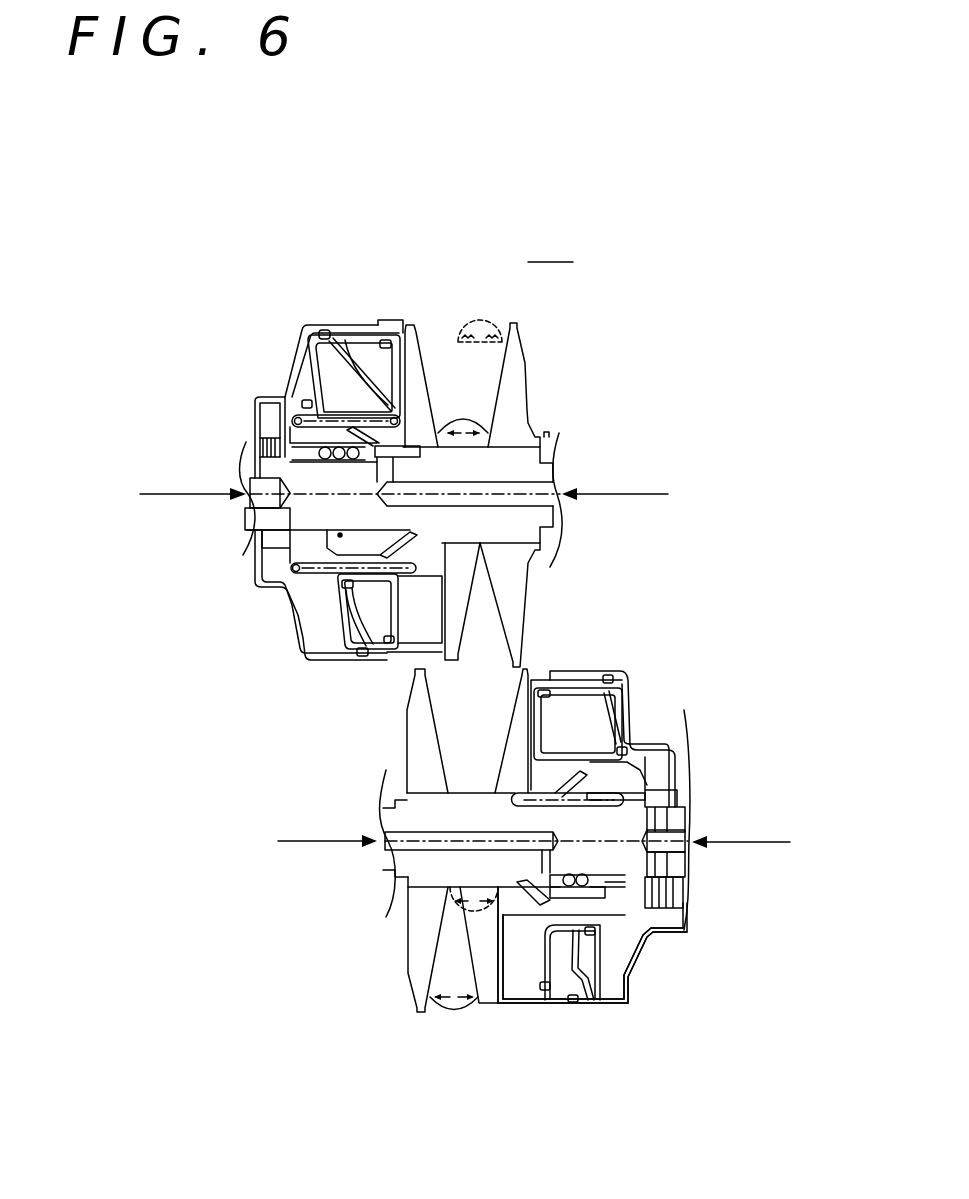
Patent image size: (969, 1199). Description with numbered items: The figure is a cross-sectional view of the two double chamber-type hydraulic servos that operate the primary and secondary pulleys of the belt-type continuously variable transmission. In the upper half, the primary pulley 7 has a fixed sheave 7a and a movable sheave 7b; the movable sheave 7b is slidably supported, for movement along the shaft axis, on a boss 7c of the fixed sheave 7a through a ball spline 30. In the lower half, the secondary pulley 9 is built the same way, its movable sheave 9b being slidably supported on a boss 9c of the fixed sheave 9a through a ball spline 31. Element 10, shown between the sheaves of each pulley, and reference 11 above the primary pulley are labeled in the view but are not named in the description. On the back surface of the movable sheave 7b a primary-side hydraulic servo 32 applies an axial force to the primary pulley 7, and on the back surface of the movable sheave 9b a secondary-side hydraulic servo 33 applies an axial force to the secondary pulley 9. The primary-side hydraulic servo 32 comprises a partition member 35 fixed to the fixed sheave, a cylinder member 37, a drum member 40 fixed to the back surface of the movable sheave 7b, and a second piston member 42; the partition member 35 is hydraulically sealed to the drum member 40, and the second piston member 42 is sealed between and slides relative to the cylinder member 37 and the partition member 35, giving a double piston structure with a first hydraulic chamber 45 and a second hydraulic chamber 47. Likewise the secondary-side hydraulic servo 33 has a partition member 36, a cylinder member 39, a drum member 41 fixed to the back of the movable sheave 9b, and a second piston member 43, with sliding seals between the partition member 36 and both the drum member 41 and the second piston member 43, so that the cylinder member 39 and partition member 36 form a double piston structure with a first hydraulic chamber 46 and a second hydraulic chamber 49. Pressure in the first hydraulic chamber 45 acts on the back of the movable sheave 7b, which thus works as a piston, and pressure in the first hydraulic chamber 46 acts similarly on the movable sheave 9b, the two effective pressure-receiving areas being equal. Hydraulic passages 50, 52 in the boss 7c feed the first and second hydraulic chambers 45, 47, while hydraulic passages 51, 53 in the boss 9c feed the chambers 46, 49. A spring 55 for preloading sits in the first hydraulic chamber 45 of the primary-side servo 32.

The primary pulley 7 is at (389, 460).
The fixed sheave 7a is at (518, 403).
The movable sheave 7b is at (413, 330).
The boss 7c is at (245, 517).
The secondary pulley 9 is at (524, 870).
The fixed sheave 9a is at (408, 928).
The movable sheave 9b is at (487, 1002).
The boss 9c is at (685, 823).
The V-belt 10 is at (465, 418).
The belt line 11 is at (555, 302).
The ball spline 30 is at (330, 465).
The ball spline 31 is at (583, 873).
The primary-side hydraulic servo 32 is at (289, 456).
The secondary-side hydraulic servo 33 is at (582, 900).
The partition member 35 is at (345, 338).
The partition member 36 is at (533, 985).
The cylinder member 37 is at (303, 345).
The cylinder member 39 is at (633, 985).
The drum member 40 is at (393, 333).
The drum member 41 is at (522, 1002).
The second piston member 42 is at (300, 382).
The second piston member 43 is at (582, 977).
The first hydraulic chamber 45 is at (313, 330).
The first hydraulic chamber 46 is at (508, 983).
The second hydraulic chamber 47 is at (320, 613).
The second hydraulic chamber 49 is at (615, 983).
The hydraulic passage 50 is at (465, 490).
The hydraulic passage 51 is at (407, 833).
The hydraulic passage 52 is at (248, 482).
The hydraulic passage 53 is at (687, 837).
The spring 55 is at (413, 577).